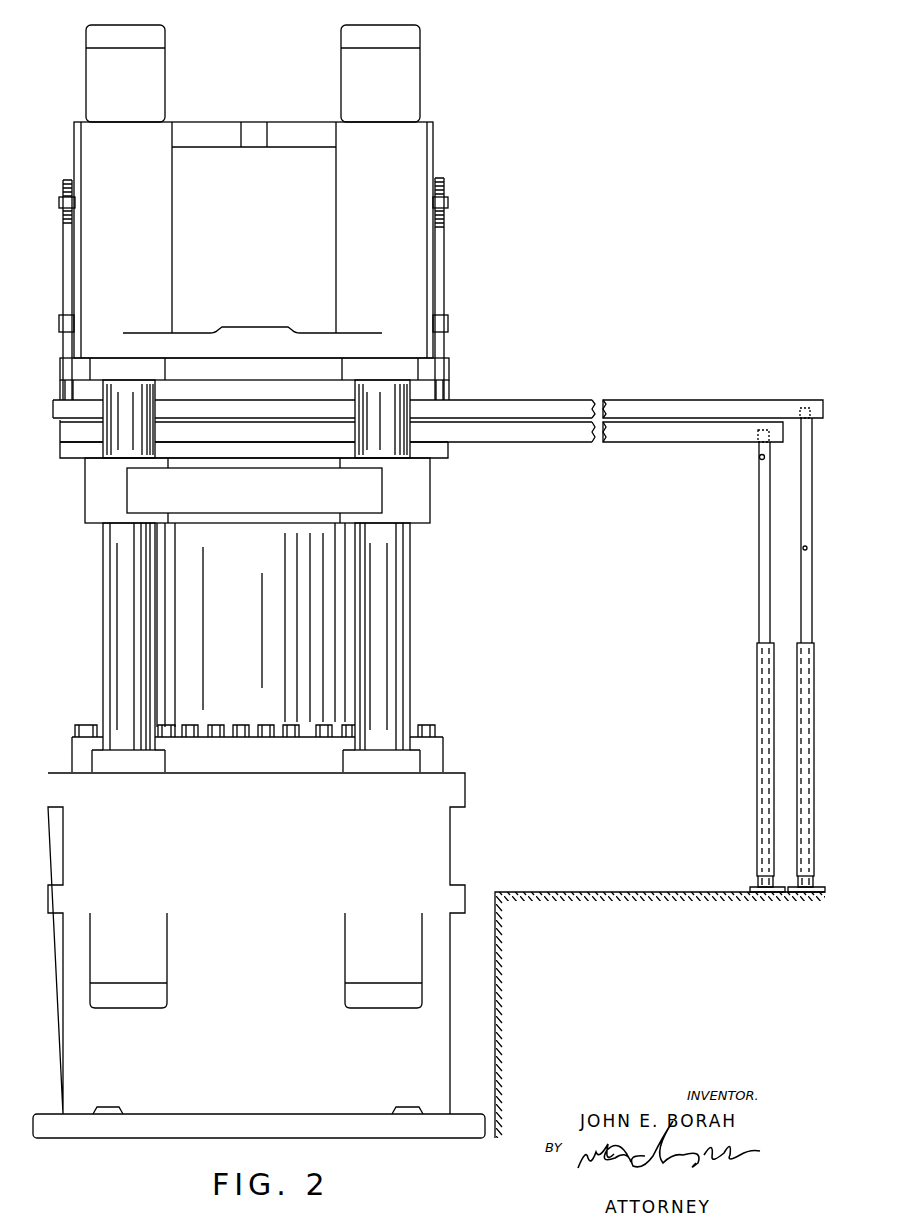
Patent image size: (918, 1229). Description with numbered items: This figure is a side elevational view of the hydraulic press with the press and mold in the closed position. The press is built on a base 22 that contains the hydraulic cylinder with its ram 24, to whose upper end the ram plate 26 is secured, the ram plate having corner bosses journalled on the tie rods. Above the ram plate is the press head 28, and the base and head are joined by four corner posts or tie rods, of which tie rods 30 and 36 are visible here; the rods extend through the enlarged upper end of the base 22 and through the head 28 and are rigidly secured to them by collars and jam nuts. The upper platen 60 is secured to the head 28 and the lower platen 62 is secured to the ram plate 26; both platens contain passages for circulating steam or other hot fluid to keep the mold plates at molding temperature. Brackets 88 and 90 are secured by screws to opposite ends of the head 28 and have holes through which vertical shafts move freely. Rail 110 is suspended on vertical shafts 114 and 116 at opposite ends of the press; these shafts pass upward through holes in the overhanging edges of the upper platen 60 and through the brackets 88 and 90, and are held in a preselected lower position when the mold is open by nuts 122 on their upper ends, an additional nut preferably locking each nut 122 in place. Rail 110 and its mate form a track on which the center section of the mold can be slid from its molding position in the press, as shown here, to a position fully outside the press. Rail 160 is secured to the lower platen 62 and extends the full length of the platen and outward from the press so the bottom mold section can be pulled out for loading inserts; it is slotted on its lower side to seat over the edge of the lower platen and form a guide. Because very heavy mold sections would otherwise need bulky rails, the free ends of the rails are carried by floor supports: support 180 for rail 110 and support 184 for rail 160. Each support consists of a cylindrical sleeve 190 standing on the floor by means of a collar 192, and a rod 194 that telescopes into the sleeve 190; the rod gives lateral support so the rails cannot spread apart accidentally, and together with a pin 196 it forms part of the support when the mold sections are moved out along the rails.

The base 22 is at (256, 1025).
The ram 24 is at (260, 712).
The ram plate 26 is at (418, 503).
The press head 28 is at (417, 162).
The tie rod 30 is at (402, 647).
The tie rod 36 is at (108, 651).
The upper platen 60 is at (438, 372).
The lower platen 62 is at (450, 452).
The bracket 88 is at (448, 322).
The bracket 90 is at (59, 323).
The rail 110 is at (687, 408).
The vertical shaft 114 is at (446, 272).
The vertical shaft 116 is at (63, 270).
The nut 122 is at (59, 204).
The rail 160 is at (529, 436).
The support 180 is at (800, 685).
The support 184 is at (758, 737).
The cylindrical sleeve 190 is at (758, 793).
The collar 192 is at (754, 886).
The rod 194 is at (759, 573).
The pin 196 is at (760, 457).